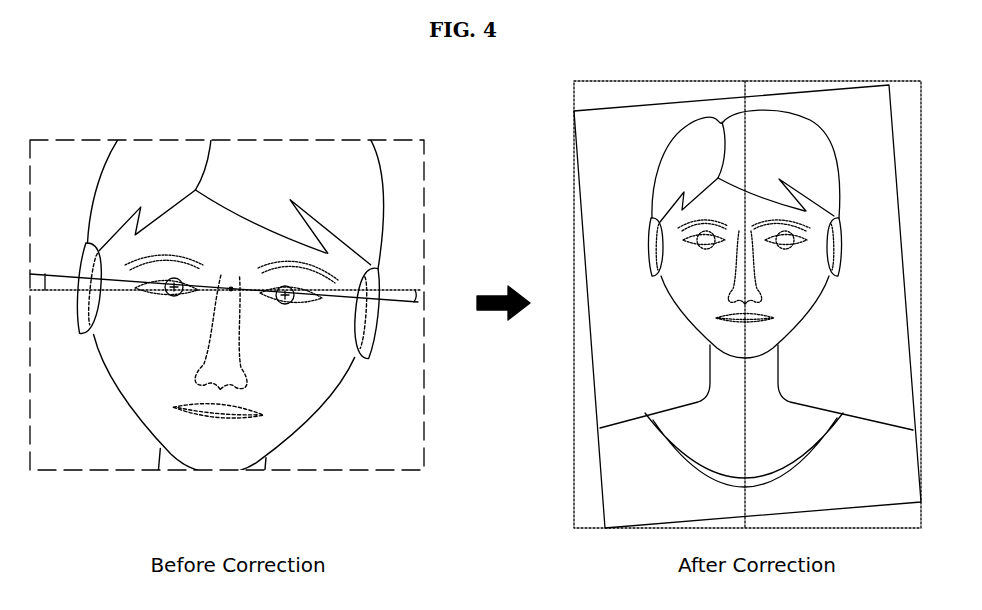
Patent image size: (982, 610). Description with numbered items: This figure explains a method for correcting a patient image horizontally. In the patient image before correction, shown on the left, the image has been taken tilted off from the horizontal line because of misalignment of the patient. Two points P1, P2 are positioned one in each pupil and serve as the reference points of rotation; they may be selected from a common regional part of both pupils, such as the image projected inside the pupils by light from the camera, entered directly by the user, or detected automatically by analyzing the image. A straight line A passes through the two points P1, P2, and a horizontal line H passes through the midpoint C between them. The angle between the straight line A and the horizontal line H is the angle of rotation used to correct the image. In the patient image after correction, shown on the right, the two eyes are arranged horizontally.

The straight line A is at (211, 278).
The horizontal line H is at (212, 297).
The first point P1 is at (164, 275).
The second point P2 is at (298, 282).
The midpoint C is at (230, 277).